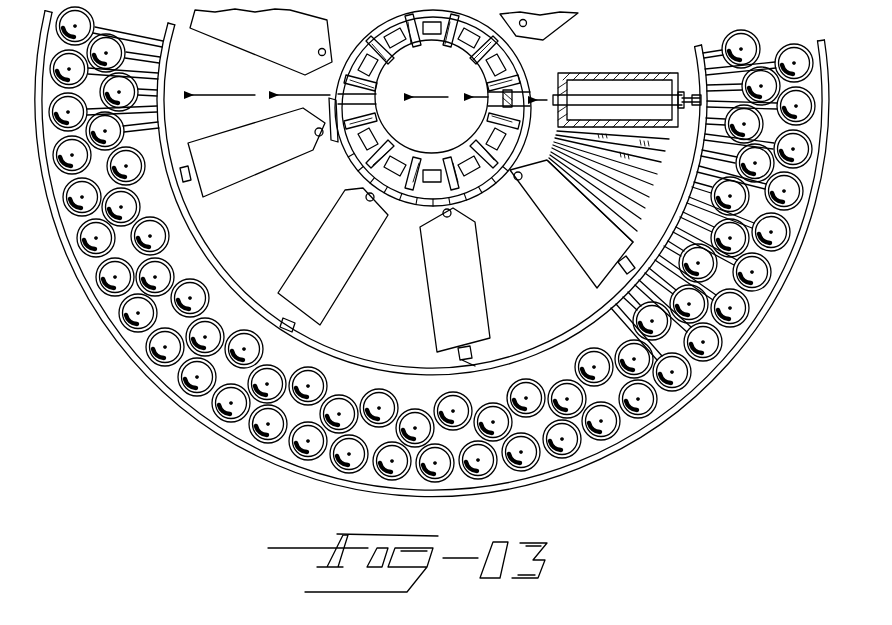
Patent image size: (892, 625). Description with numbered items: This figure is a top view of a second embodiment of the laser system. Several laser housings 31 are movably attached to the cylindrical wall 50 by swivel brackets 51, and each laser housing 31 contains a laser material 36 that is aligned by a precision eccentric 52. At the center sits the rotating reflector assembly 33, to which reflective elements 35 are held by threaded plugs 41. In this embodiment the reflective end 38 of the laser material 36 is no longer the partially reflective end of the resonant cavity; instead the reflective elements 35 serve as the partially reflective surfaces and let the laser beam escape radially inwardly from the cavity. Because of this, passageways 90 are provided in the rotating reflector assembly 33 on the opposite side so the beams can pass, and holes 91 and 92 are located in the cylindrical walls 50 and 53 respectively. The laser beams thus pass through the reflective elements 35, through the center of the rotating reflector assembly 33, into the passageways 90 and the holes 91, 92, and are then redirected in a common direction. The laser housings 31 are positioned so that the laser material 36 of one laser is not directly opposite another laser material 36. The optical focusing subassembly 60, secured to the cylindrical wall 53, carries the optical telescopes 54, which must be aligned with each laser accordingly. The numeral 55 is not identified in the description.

The laser housing 31 is at (262, 272).
The rotating reflector assembly 33 is at (476, 48).
The reflective element 35 is at (503, 67).
The laser material 36 is at (606, 77).
The reflective end 38 is at (690, 85).
The threaded plug 41 is at (353, 86).
The cylindrical wall 50 is at (476, 91).
The swivel bracket 51 is at (297, 22).
The precision eccentric 52 is at (506, 368).
The cylindrical wall 53 is at (675, 200).
The optical telescope 54 is at (707, 378).
The outer ring 55 is at (653, 438).
The optical focusing subassembly 60 is at (655, 245).
The passageway 90 is at (319, 50).
The hole 91 is at (332, 90).
The hole 92 is at (163, 95).